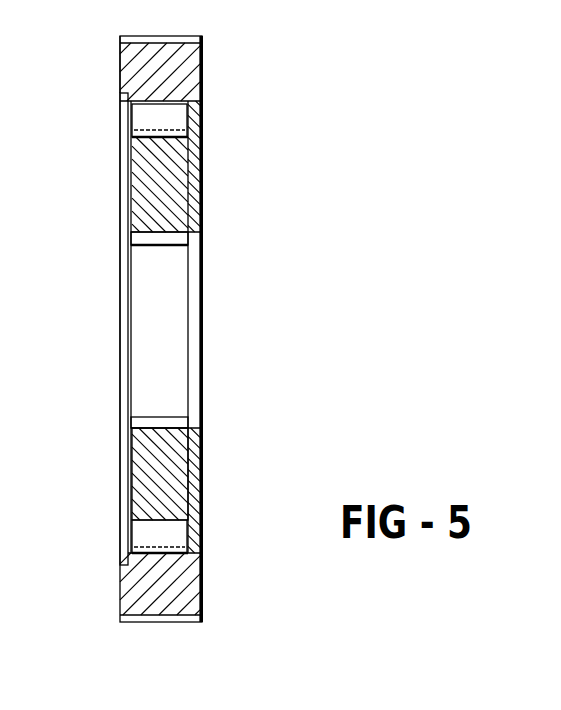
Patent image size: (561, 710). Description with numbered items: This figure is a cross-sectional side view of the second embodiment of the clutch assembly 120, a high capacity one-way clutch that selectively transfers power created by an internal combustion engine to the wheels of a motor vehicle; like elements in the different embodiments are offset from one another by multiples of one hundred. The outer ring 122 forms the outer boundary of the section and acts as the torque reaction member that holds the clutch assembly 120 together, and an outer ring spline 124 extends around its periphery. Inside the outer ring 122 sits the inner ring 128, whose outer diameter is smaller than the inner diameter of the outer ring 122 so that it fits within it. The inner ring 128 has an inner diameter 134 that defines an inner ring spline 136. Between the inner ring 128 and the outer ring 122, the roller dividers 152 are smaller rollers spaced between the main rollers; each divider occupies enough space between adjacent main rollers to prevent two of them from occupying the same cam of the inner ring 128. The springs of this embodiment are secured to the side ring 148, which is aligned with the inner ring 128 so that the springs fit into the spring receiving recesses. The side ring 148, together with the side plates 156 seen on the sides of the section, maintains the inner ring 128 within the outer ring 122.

The clutch assembly 120 is at (236, 405).
The outer ring 122 is at (120, 78).
The outer ring spline 124 is at (180, 36).
The inner ring 128 is at (189, 210).
The inner diameter 134 is at (151, 417).
The inner ring spline 136 is at (158, 245).
The side ring 148 is at (124, 110).
The roller dividers 152 is at (131, 523).
The side plates 156 is at (126, 542).